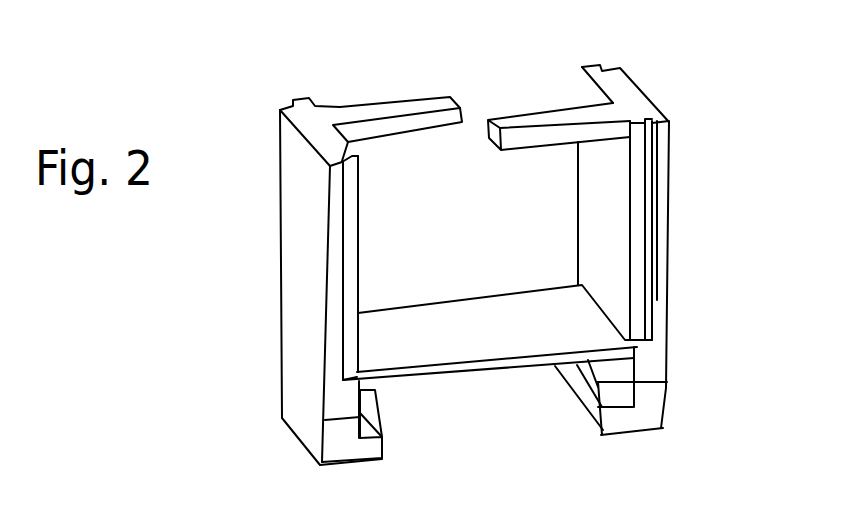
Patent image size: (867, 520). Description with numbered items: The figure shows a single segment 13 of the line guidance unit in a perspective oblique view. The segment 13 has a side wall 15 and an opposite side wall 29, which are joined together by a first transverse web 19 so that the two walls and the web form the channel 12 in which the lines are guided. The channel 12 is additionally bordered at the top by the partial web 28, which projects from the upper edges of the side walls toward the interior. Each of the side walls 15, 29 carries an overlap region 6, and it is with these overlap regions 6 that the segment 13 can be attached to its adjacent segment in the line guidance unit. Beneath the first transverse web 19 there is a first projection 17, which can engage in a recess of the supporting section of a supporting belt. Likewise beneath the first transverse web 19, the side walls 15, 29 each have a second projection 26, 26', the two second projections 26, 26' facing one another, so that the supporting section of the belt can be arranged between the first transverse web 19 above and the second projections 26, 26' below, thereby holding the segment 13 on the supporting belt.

The overlap region 6 is at (665, 125).
The channel 12 is at (485, 268).
The segment 13 is at (265, 278).
The side wall 15 is at (670, 213).
The first projection 17 is at (607, 371).
The first transverse web 19 is at (467, 372).
The second projection 26 is at (357, 453).
The second projection 26' is at (611, 427).
The partial web 28 is at (373, 108).
The side wall 29 is at (300, 210).